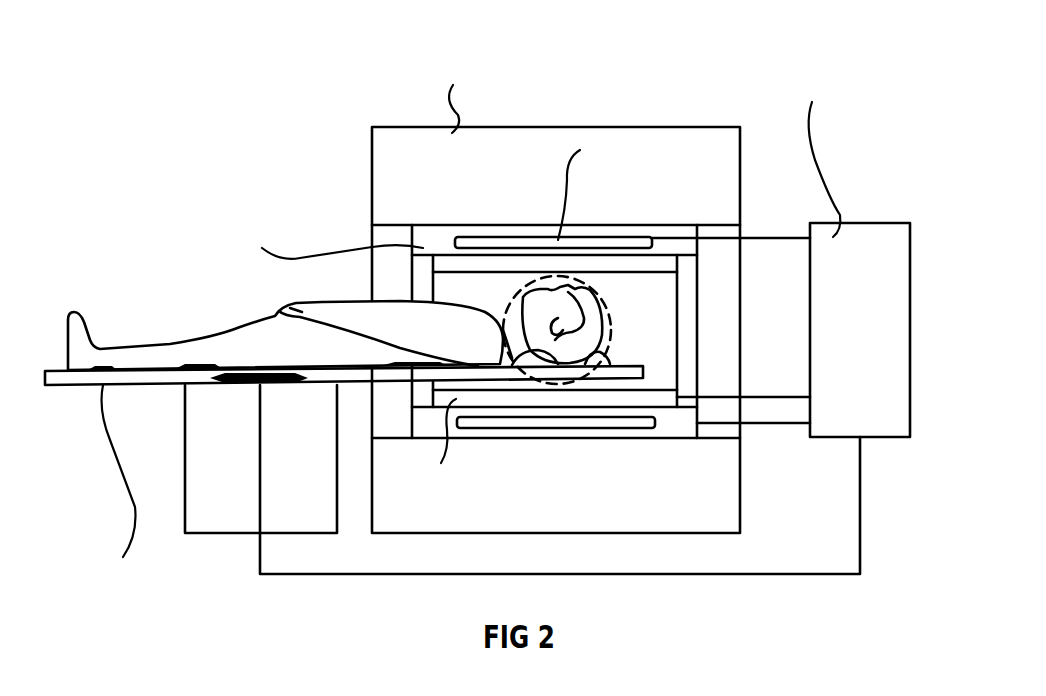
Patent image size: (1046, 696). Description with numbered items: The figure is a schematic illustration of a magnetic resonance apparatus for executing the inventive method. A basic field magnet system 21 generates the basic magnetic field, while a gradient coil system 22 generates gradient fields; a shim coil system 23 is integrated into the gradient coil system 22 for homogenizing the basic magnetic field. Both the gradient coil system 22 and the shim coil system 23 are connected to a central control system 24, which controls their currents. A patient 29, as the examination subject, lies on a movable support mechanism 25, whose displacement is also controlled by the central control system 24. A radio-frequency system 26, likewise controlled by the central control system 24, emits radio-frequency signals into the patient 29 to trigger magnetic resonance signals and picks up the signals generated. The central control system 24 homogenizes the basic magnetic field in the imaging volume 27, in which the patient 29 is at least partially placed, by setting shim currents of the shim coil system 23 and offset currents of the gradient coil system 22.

The basic field magnet system 21 is at (397, 163).
The gradient coil system 22 is at (423, 238).
The shim coil system 23 is at (507, 236).
The central control system 24 is at (858, 220).
The movable support mechanism 25 is at (184, 386).
The radio-frequency system 26 is at (656, 397).
The imaging volume 27 is at (609, 308).
The patient 29 is at (267, 333).